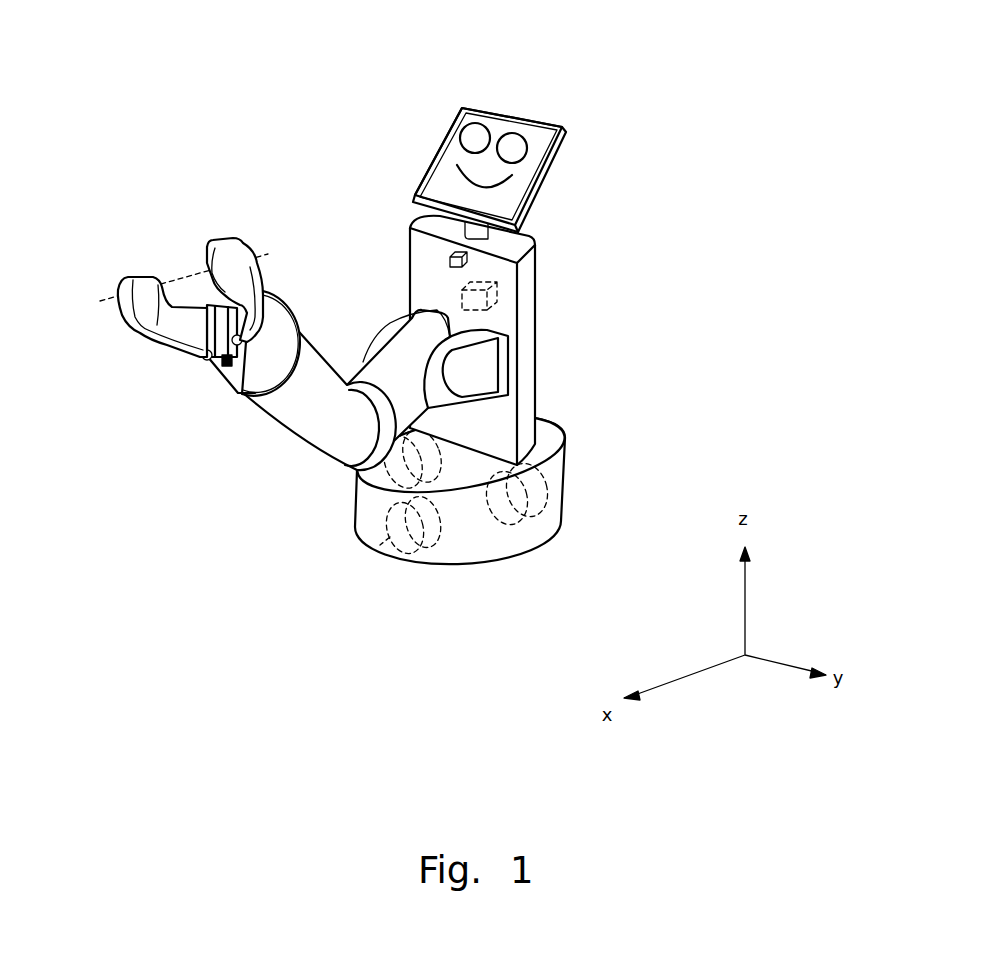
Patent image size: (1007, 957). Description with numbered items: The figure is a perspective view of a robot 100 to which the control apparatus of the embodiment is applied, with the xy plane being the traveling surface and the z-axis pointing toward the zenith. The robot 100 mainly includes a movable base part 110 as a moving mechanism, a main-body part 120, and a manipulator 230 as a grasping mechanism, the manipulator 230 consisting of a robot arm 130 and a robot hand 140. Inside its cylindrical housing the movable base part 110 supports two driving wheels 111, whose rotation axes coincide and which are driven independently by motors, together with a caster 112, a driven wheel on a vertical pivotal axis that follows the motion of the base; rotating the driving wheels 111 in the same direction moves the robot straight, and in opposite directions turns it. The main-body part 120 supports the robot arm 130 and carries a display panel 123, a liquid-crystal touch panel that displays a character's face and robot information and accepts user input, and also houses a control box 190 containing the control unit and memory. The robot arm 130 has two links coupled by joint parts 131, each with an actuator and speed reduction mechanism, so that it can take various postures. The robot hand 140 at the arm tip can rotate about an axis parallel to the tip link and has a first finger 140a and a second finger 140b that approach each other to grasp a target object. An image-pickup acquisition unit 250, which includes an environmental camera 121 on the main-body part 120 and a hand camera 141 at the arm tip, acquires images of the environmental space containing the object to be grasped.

The robot 100 is at (644, 158).
The movable base part 110 is at (565, 474).
The driving wheels 111 is at (357, 491).
The caster 112 is at (375, 545).
The main-body part 120 is at (527, 367).
The environmental camera 121 is at (450, 257).
The display panel 123 is at (537, 133).
The robot arm 130 is at (386, 392).
The joint part 131 is at (355, 460).
The robot hand 140 is at (188, 283).
The first finger 140a is at (127, 276).
The second finger 140b is at (232, 240).
The hand camera 141 is at (241, 338).
The control box 190 is at (507, 290).
The manipulator 230 is at (340, 263).
The image-pickup acquisition unit 250 is at (260, 77).